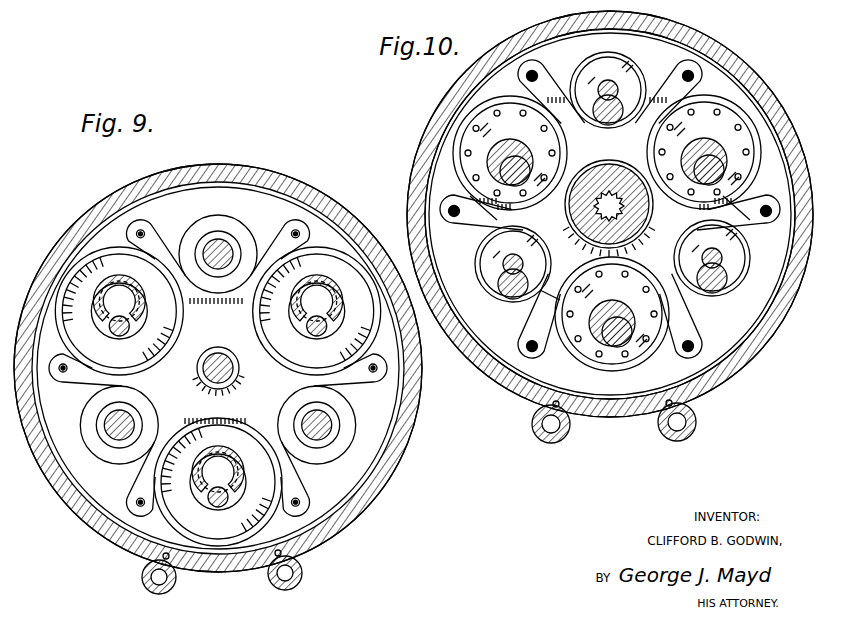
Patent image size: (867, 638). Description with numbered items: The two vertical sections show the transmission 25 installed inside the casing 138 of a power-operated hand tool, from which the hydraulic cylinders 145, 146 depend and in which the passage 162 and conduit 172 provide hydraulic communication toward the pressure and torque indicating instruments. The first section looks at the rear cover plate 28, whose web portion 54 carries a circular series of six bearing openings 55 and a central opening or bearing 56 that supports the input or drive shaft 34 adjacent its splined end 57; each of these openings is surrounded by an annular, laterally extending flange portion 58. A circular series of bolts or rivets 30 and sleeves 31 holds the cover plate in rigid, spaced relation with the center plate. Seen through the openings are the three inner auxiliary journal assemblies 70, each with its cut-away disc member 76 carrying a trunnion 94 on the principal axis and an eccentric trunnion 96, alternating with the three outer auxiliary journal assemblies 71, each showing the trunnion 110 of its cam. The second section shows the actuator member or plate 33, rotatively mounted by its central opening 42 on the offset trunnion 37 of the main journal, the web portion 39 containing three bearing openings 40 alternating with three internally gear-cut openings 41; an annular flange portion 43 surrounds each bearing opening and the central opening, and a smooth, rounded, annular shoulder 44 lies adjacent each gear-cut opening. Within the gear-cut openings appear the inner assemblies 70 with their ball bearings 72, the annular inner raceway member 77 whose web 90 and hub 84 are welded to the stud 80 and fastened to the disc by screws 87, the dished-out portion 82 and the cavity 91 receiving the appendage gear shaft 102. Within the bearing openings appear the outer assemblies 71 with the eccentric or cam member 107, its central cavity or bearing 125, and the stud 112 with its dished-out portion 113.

In FIG. 9, the casing 138 is at (232, 165).
In FIG. 10, the casing 138 is at (712, 48).
In FIG. 9, the transmission 25 is at (378, 416).
In FIG. 10, the transmission 25 is at (722, 314).
In FIG. 9, the rear cover plate 28 is at (259, 212).
In FIG. 9, the bolts or rivets 30 is at (296, 228).
In FIG. 10, the bolts or rivets 30 is at (688, 72).
In FIG. 9, the web portion 54 is at (352, 266).
In FIG. 9, the flange portion 58 is at (183, 332).
In FIG. 9, the trunnion 110 is at (205, 252).
In FIG. 9, the outer auxiliary journal assembly 71 is at (238, 235).
In FIG. 10, the outer auxiliary journal assembly 71 is at (590, 78).
In FIG. 9, the bearing openings 55 is at (218, 250).
In FIG. 9, the inner auxiliary journal assembly 70 is at (92, 338).
In FIG. 10, the inner auxiliary journal assembly 70 is at (530, 133).
In FIG. 9, the trunnion 94 is at (125, 296).
In FIG. 9, the trunnion 96 is at (120, 325).
In FIG. 9, the cut-away disc member 76 is at (138, 304).
In FIG. 9, the input or drive shaft 34 is at (213, 362).
In FIG. 9, the central opening or bearing 56 is at (230, 360).
In FIG. 9, the hydraulic cylinder 146 is at (160, 580).
In FIG. 10, the hydraulic cylinder 146 is at (553, 430).
In FIG. 9, the passage 162 is at (163, 556).
In FIG. 10, the passage 162 is at (558, 407).
In FIG. 9, the conduit 172 is at (281, 553).
In FIG. 10, the conduit 172 is at (672, 404).
In FIG. 10, the sleeves 31 is at (534, 71).
In FIG. 10, the eccentric or cam member 107 is at (606, 56).
In FIG. 10, the bearing openings 40 is at (616, 84).
In FIG. 10, the central cavity or bearing 125 is at (626, 82).
In FIG. 10, the flange portion 43 is at (641, 92).
In FIG. 10, the screws 87 is at (718, 100).
In FIG. 10, the web 90 is at (505, 128).
In FIG. 10, the annular shoulder 44 is at (758, 150).
In FIG. 10, the ball bearings 72 is at (760, 136).
In FIG. 10, the annular inner raceway member 77 is at (462, 145).
In FIG. 10, the hub 84 is at (709, 136).
In FIG. 10, the stud 80 is at (690, 150).
In FIG. 10, the stud 112 is at (604, 122).
In FIG. 10, the internally gear-cut openings 41 is at (655, 136).
In FIG. 10, the central opening 42 is at (620, 168).
In FIG. 10, the cavity 91 is at (525, 166).
In FIG. 10, the dished-out portion 82 is at (500, 176).
In FIG. 10, the shaft 102 is at (720, 178).
In FIG. 10, the trunnion 37 is at (585, 212).
In FIG. 10, the actuator member or plate 33 is at (488, 235).
In FIG. 10, the web portion 39 is at (540, 302).
In FIG. 10, the dished-out portion 113 is at (524, 264).
In FIG. 10, the splined end 57 is at (638, 236).
In FIG. 10, the hydraulic cylinder 145 is at (680, 427).